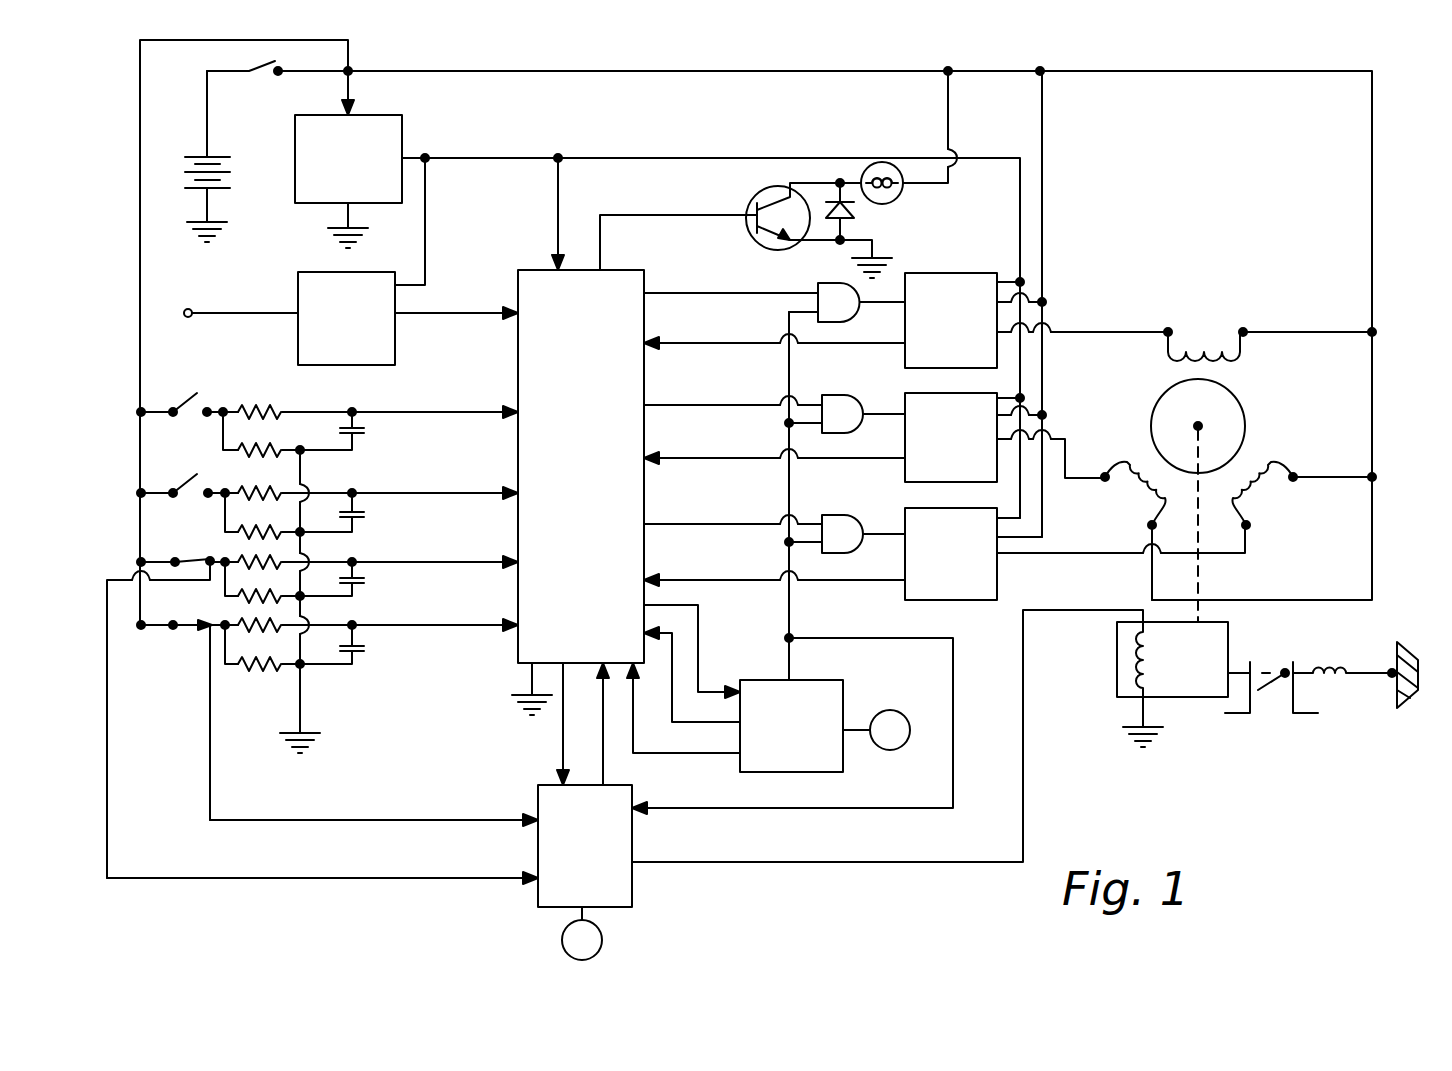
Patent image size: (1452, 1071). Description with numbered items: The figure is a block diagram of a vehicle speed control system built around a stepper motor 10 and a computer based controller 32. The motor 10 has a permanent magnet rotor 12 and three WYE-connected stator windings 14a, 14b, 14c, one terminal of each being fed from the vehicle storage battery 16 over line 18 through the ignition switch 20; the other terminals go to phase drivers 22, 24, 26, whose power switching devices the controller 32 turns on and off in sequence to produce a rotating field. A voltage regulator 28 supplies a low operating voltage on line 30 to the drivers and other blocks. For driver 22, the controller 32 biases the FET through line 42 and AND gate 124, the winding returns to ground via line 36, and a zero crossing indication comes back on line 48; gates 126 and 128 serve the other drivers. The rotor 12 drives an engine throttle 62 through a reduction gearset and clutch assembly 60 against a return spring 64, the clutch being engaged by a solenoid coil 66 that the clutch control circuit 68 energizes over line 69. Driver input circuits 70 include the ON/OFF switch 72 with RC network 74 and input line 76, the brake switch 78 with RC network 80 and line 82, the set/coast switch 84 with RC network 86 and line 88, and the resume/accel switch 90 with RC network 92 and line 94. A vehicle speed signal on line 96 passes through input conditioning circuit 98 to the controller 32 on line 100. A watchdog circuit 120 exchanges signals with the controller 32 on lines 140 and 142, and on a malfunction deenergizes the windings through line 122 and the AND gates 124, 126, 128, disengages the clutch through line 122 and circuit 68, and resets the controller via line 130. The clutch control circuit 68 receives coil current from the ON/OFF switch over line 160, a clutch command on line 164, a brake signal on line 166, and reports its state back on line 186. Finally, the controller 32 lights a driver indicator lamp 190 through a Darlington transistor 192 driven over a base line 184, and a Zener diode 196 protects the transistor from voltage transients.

The stepper motor 10 is at (1255, 247).
The permanent magnet rotor 12 is at (1243, 405).
The stator winding 14a is at (1215, 357).
The stator winding 14b is at (1145, 463).
The stator winding 14c is at (1265, 462).
The vehicle storage battery 16 is at (222, 156).
The battery supply line 18 is at (820, 71).
The ignition switch 20 is at (262, 66).
The phase driver 22 is at (912, 273).
The phase driver 24 is at (905, 396).
The phase driver 26 is at (1000, 596).
The voltage regulator 28 is at (402, 118).
The regulated voltage line 30 is at (535, 156).
The computer based controller 32 is at (645, 510).
The ground line 36 is at (1115, 332).
The FET bias line 42 is at (712, 293).
The zero crossing indication line 48 is at (745, 343).
The reduction gearset and clutch assembly 60 is at (1205, 697).
The engine throttle 62 is at (1258, 692).
The return spring 64 is at (1335, 680).
The solenoid coil 66 is at (1127, 655).
The clutch control circuit 68 is at (632, 893).
The coil energization line 69 is at (1023, 770).
The driver input circuits 70 is at (175, 682).
The ON/OFF switch 72 is at (205, 640).
The RC network 74 is at (345, 625).
The input line 76 is at (445, 625).
The brake switch 78 is at (190, 562).
The RC network 80 is at (345, 562).
The input line 82 is at (450, 562).
The set/coast switch 84 is at (190, 477).
The RC network 86 is at (324, 491).
The input line 88 is at (415, 493).
The resume/accel switch 90 is at (190, 395).
The RC network 92 is at (300, 408).
The input line 94 is at (430, 412).
The vehicle speed signal line 96 is at (218, 313).
The input conditioning circuit 98 is at (312, 272).
The input line 100 is at (450, 313).
The watchdog circuit 120 is at (815, 773).
The watchdog output line 122 is at (795, 666).
The AND gate 124 is at (832, 283).
The AND gate 126 is at (860, 435).
The AND gate 128 is at (858, 530).
The reset line 130 is at (675, 757).
The controller output line 140 is at (698, 635).
The watchdog feedback line 142 is at (690, 672).
The coil supply line 160 is at (352, 820).
The clutch command line 164 is at (560, 732).
The brake switch signal line 166 is at (300, 878).
The transistor drive line 184 is at (605, 214).
The feedback line 186 is at (605, 765).
The driver indicator lamp 190 is at (903, 190).
The Darlington transistor 192 is at (748, 230).
The Zener diode 196 is at (866, 215).